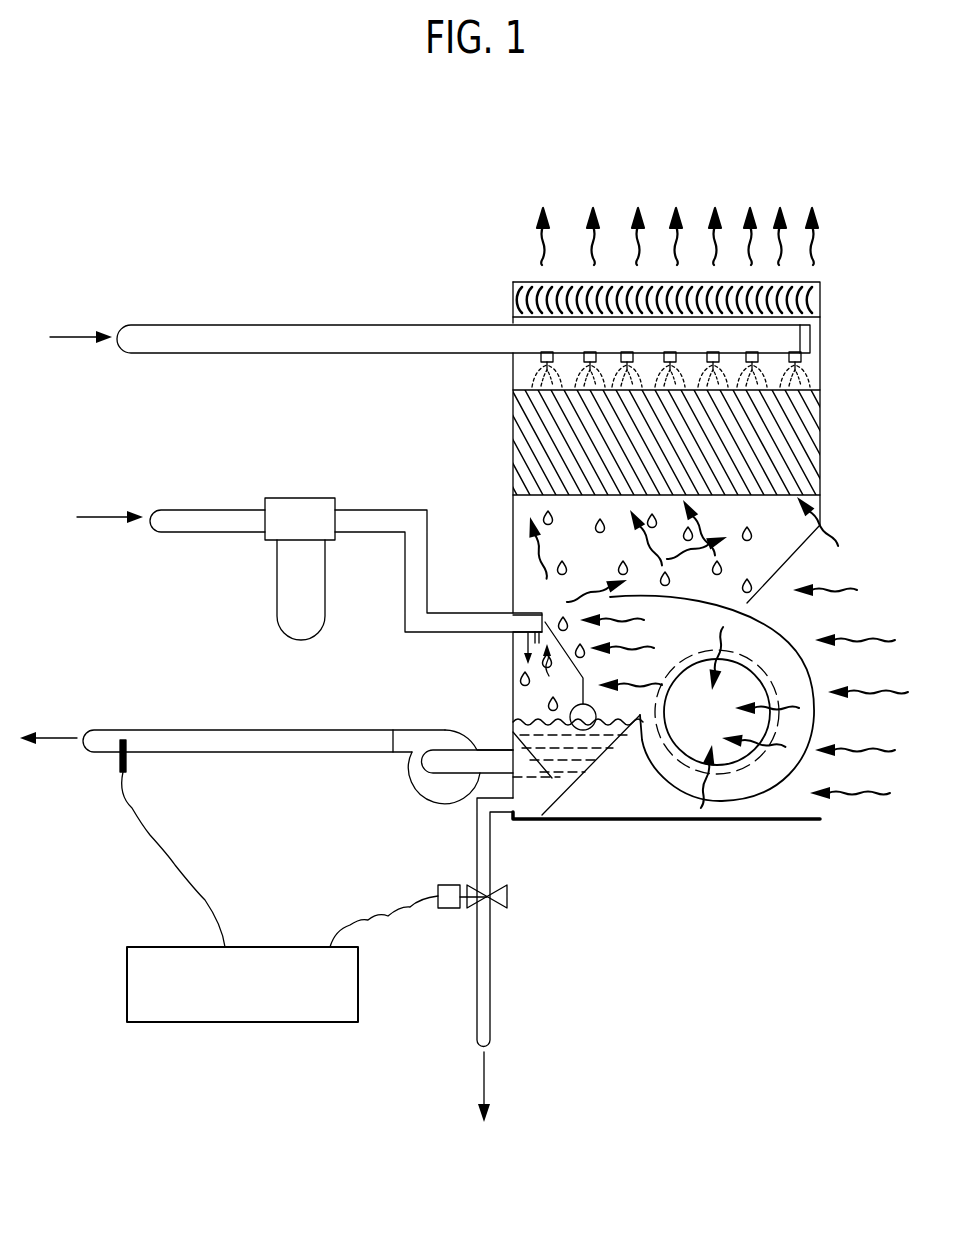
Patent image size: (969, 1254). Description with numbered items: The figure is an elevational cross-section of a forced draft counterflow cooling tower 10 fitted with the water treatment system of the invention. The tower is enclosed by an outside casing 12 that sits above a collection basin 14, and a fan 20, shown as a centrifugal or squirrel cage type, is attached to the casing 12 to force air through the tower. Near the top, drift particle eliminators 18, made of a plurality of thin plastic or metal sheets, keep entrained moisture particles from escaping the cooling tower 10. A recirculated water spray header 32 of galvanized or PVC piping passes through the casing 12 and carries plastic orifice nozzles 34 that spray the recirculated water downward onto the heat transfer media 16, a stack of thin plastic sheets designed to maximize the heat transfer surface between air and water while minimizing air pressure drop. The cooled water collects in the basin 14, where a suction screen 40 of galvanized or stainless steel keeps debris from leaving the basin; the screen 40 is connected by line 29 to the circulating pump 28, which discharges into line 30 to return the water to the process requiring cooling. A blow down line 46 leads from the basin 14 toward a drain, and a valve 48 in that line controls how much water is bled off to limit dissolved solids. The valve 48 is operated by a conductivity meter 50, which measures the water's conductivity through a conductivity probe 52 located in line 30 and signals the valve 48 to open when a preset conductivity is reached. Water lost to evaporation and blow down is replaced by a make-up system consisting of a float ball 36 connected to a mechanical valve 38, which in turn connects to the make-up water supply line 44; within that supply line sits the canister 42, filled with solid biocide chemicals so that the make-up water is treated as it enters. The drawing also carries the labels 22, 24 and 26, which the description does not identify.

The cooling tower 10 is at (370, 268).
The outside casing 12 is at (513, 445).
The collection basin 14 is at (513, 650).
The heat transfer media 16 is at (800, 447).
The drift particle eliminators 18 is at (816, 285).
The fan 20 is at (787, 681).
The water supply pipe 22 is at (162, 325).
The spray nozzles 24 is at (513, 375).
The sump reservoir 26 is at (580, 766).
The circulating pump 28 is at (407, 768).
The line 29 is at (483, 742).
The line 30 is at (128, 728).
The recirculated water spray header 32 is at (808, 330).
The orifice nozzles 34 is at (807, 350).
The float ball 36 is at (568, 712).
The mechanical valve 38 is at (522, 613).
The suction screen 40 is at (513, 767).
The canister 42 is at (277, 583).
The make-up water supply line 44 is at (403, 600).
The blow down line 46 is at (490, 852).
The valve 48 is at (507, 900).
The conductivity meter 50 is at (237, 1023).
The conductivity probe 52 is at (120, 762).